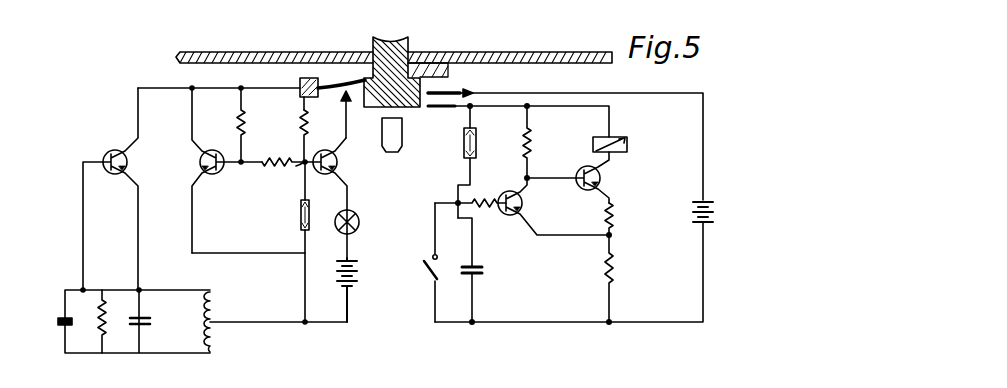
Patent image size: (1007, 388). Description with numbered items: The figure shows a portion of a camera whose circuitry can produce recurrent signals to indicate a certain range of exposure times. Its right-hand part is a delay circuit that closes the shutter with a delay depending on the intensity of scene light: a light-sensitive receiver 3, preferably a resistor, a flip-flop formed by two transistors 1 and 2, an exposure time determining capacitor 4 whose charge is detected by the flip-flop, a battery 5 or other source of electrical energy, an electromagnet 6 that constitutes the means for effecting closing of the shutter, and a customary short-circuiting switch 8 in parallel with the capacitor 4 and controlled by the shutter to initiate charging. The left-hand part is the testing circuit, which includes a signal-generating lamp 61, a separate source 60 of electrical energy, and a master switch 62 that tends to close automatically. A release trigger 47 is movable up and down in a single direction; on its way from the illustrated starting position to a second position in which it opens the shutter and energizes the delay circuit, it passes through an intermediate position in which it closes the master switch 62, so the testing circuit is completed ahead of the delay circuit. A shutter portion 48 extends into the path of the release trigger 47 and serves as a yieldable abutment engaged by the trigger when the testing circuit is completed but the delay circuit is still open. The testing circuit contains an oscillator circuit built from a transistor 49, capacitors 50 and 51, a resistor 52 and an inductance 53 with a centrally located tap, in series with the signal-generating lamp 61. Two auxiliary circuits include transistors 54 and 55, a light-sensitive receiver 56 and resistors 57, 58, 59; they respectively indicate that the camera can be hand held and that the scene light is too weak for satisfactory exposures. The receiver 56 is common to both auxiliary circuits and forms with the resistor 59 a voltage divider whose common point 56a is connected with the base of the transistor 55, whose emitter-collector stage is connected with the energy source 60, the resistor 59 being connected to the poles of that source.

The transistor 1 is at (521, 207).
The transistor 2 is at (600, 178).
The light-sensitive receiver 3 is at (484, 142).
The exposure time determining capacitor 4 is at (483, 270).
The battery 5 is at (692, 212).
The electromagnet 6 is at (627, 146).
The short-circuiting switch 8 is at (428, 268).
The release trigger 47 is at (374, 46).
The shutter portion 48 is at (402, 143).
The transistor 49 is at (128, 160).
The capacitor 50 is at (74, 324).
The capacitor 51 is at (150, 322).
The resistor 52 is at (106, 306).
The inductance 53 is at (214, 312).
The transistor 54 is at (217, 173).
The transistor 55 is at (338, 165).
The light-sensitive receiver 56 is at (300, 214).
The common point 56a is at (298, 160).
The resistor 57 is at (250, 128).
The resistor 58 is at (281, 170).
The resistor 59 is at (308, 128).
The source of electrical energy 60 is at (357, 273).
The signal-generating lamp 61 is at (359, 222).
The master switch 62 is at (362, 77).